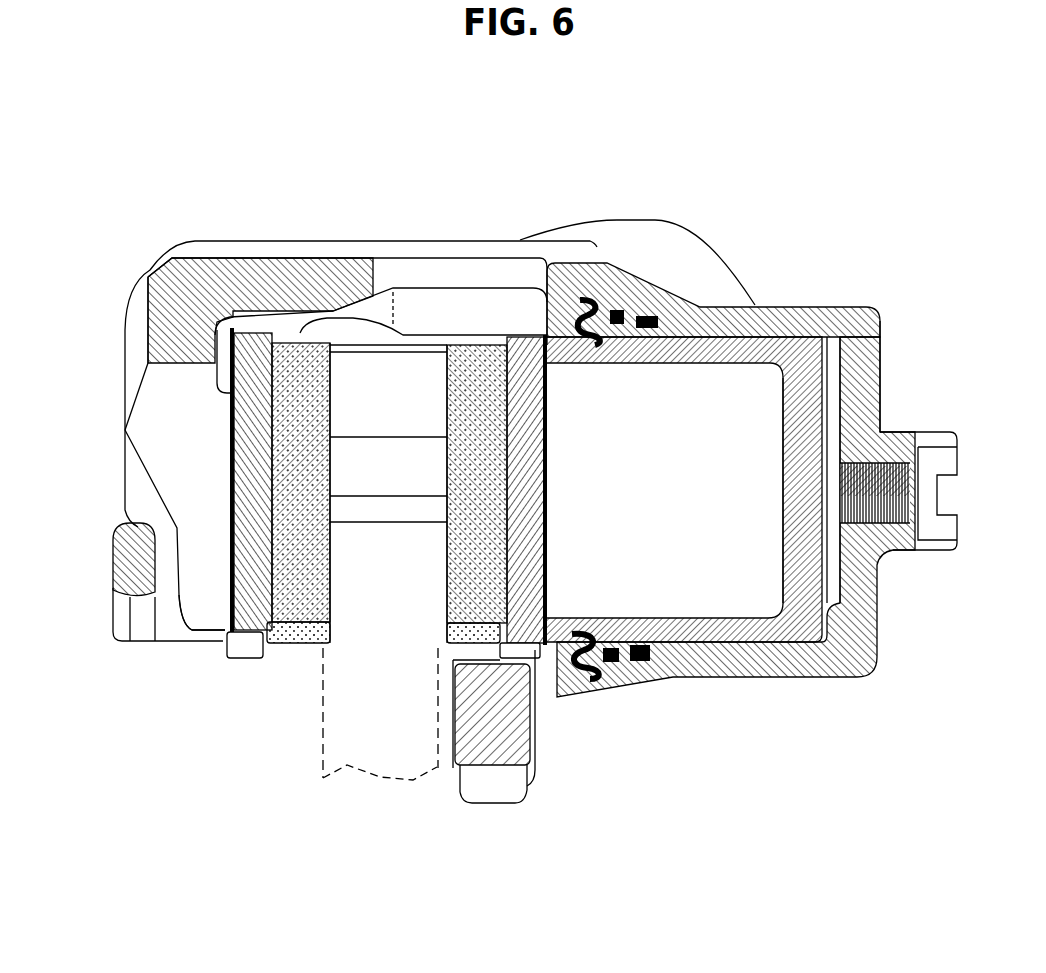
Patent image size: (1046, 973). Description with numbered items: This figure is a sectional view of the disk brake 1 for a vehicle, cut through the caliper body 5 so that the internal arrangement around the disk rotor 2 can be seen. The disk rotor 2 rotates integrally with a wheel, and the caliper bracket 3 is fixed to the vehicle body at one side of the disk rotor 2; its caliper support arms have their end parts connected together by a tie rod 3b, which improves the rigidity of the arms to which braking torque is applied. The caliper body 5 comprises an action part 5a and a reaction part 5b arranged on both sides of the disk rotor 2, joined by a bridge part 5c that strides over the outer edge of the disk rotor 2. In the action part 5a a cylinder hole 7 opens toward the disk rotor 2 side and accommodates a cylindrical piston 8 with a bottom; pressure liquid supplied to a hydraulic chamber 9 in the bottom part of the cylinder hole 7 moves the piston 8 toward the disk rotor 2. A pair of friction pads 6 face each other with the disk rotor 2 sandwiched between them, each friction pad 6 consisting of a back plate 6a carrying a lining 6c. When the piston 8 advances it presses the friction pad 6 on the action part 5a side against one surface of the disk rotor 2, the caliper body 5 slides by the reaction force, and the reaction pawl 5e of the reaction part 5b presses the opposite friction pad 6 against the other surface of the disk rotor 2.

The disk brake 1 is at (534, 128).
The disk rotor 2 is at (383, 783).
The caliper bracket 3 is at (542, 734).
The tie rod 3b is at (114, 553).
The caliper body 5 is at (622, 214).
The action part 5a is at (880, 358).
The reaction part 5b is at (152, 322).
The bridge part 5c is at (440, 267).
The reaction pawl 5e is at (197, 620).
The friction pad 6 is at (604, 462).
The back plate 6a is at (540, 498).
The lining 6c is at (540, 466).
The cylinder hole 7 is at (712, 648).
The piston 8 is at (797, 471).
The hydraulic chamber 9 is at (840, 410).